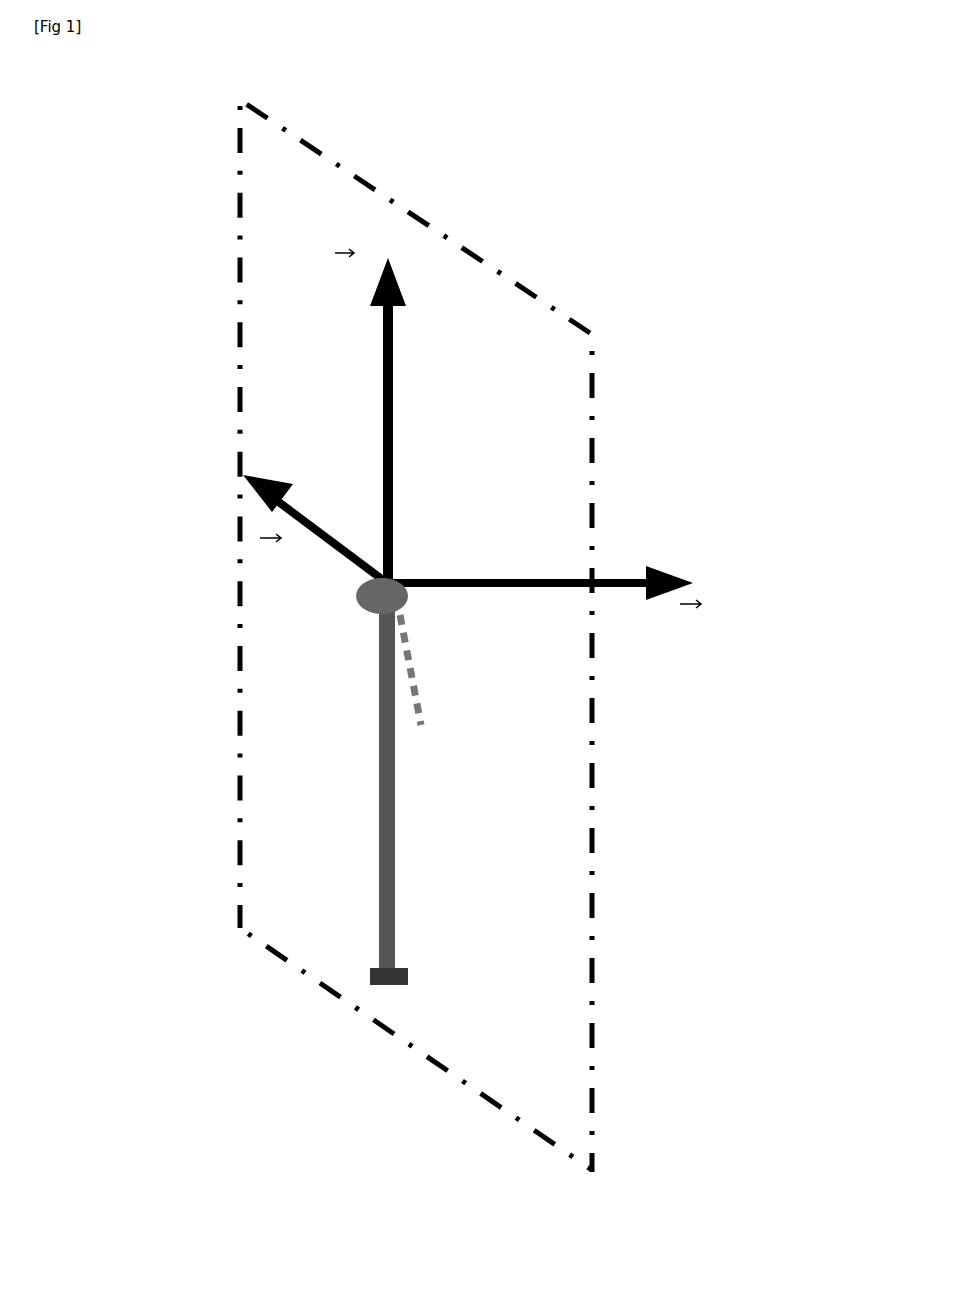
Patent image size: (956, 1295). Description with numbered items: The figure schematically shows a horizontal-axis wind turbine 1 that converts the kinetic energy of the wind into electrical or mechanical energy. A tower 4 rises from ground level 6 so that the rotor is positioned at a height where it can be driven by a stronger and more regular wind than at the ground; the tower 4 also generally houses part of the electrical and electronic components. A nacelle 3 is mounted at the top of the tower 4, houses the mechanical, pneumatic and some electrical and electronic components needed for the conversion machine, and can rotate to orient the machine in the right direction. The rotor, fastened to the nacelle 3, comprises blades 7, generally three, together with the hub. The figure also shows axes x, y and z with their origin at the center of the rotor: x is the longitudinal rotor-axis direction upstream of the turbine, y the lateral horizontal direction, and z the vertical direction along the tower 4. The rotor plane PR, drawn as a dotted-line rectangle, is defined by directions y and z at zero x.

The wind turbine 1 is at (451, 340).
The nacelle 3 is at (387, 624).
The tower 4 is at (394, 823).
The ground level 6 is at (374, 980).
The blades 7 is at (436, 712).
The rotor plane PR is at (273, 964).